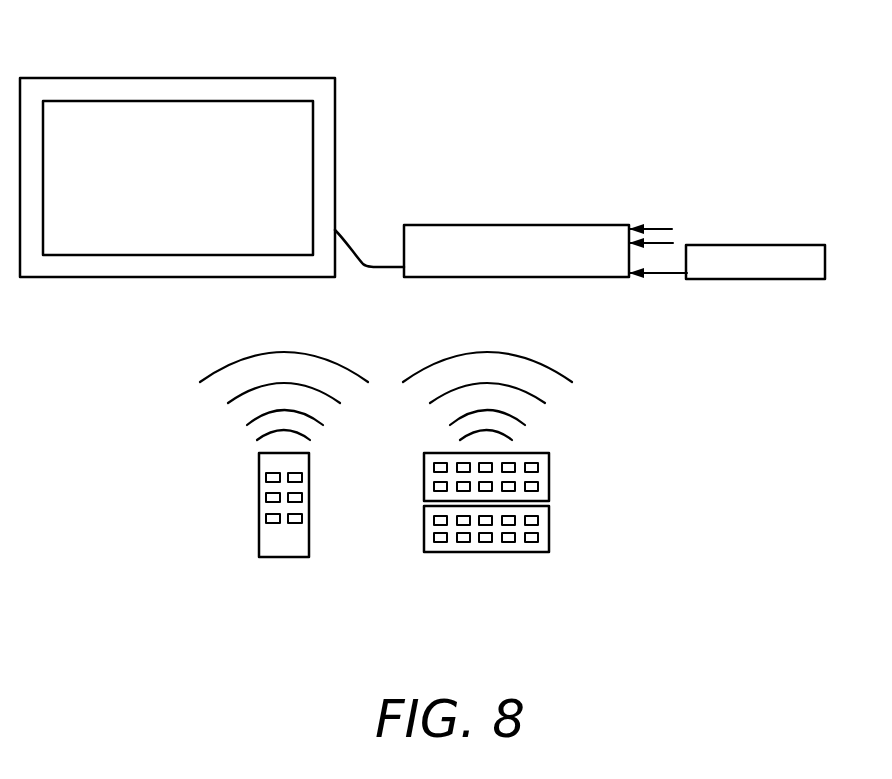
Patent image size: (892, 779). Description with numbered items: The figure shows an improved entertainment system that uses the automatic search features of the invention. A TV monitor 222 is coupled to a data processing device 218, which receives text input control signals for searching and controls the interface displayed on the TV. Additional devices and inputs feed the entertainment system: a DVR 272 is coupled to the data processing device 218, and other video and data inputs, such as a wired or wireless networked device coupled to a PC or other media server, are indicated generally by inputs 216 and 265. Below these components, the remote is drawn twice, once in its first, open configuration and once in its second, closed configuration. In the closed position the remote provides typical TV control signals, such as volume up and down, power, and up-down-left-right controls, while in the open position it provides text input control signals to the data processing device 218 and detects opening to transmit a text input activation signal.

The TV monitor 222 is at (160, 78).
The data processing device 218 is at (510, 225).
The input 216 is at (672, 229).
The input 265 is at (670, 243).
The DVR 272 is at (803, 245).